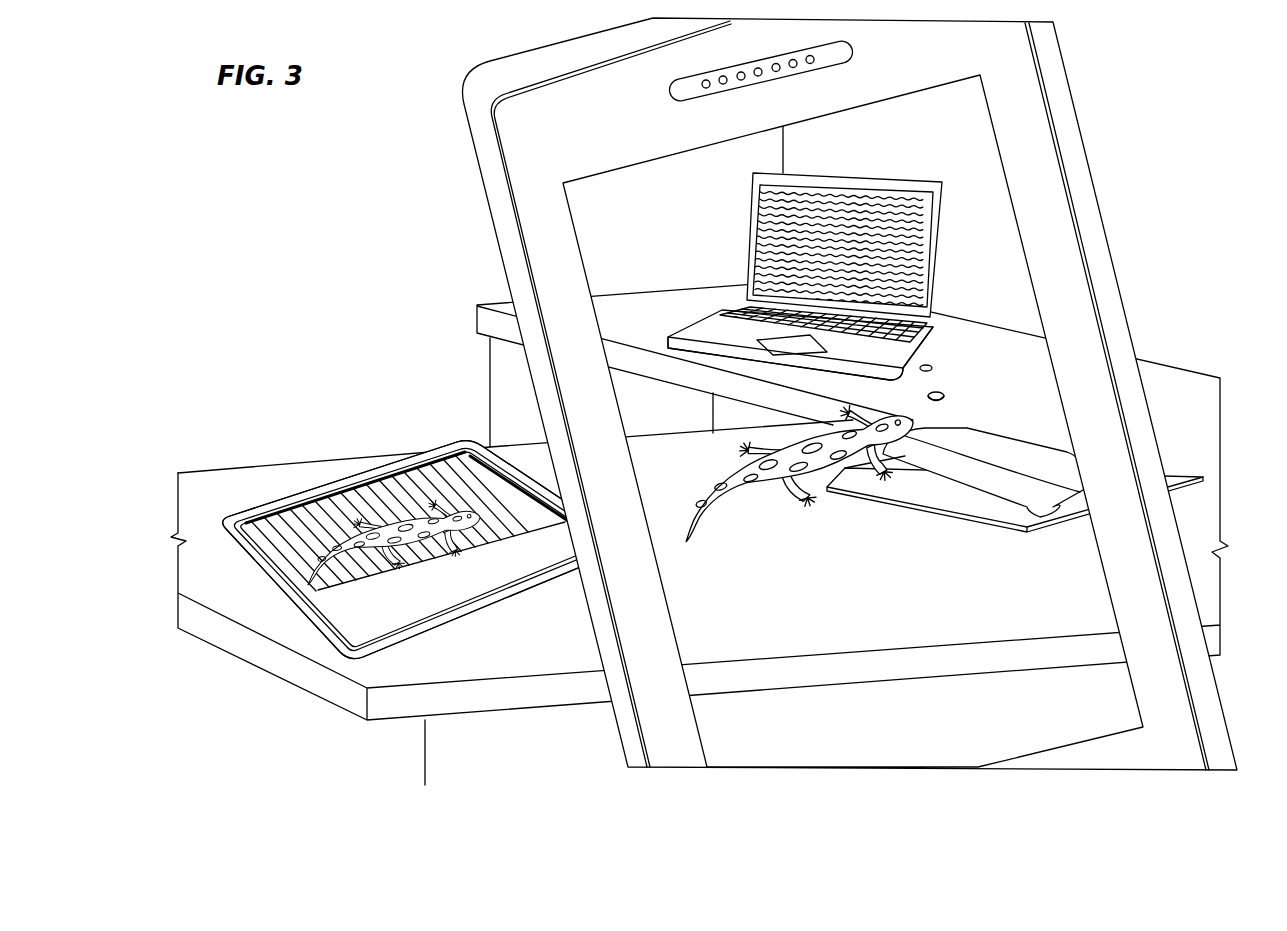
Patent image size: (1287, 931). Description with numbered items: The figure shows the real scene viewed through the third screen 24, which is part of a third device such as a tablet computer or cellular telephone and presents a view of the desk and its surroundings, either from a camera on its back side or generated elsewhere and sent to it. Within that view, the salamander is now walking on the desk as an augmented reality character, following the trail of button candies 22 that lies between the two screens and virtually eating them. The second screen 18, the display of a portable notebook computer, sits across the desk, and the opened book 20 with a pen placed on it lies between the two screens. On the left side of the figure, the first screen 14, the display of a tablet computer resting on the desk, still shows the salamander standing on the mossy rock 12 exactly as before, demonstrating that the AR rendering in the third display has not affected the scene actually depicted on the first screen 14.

The mossy rock 12 is at (521, 564).
The first screen 14 is at (293, 490).
The second screen 18 is at (938, 237).
The opened book 20 is at (1178, 468).
The button candies 22 is at (940, 388).
The third screen 24 is at (1084, 155).